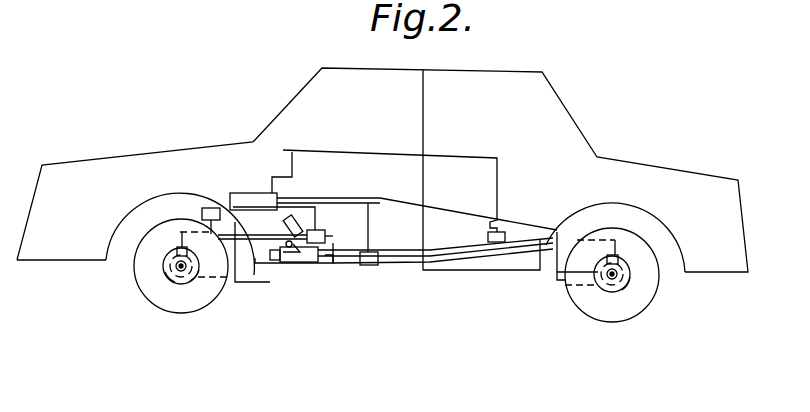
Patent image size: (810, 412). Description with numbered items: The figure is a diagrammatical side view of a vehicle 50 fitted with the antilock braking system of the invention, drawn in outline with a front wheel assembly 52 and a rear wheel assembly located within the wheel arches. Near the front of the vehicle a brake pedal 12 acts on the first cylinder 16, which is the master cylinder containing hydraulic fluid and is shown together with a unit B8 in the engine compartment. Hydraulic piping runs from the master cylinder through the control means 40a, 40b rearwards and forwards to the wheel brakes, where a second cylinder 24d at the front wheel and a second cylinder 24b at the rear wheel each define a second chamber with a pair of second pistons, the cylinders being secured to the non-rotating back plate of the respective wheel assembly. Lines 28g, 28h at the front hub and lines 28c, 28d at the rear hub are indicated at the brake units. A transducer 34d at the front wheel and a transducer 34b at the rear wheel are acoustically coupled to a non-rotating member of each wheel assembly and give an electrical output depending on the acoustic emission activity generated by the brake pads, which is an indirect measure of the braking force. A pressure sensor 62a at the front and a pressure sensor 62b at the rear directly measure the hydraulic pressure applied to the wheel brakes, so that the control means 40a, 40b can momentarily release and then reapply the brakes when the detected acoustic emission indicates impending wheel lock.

The motor vehicle 50 is at (226, 120).
The brake master cylinder B8 is at (253, 201).
The brake pedal 12 is at (295, 210).
The first cylinder 16 is at (282, 265).
The pressure sensor 62a is at (204, 209).
The pressure sensor 62b is at (488, 236).
The second cylinder 24d is at (178, 251).
The second cylinder 24b is at (620, 259).
The wheel assembly 52 is at (146, 262).
The control means 40a is at (327, 257).
The control means 40b is at (362, 266).
The brake line 28g is at (165, 272).
The brake line 28h is at (200, 277).
The brake line 28c is at (558, 277).
The brake line 28d is at (630, 277).
The transducer 34d is at (176, 283).
The transducer 34b is at (622, 290).